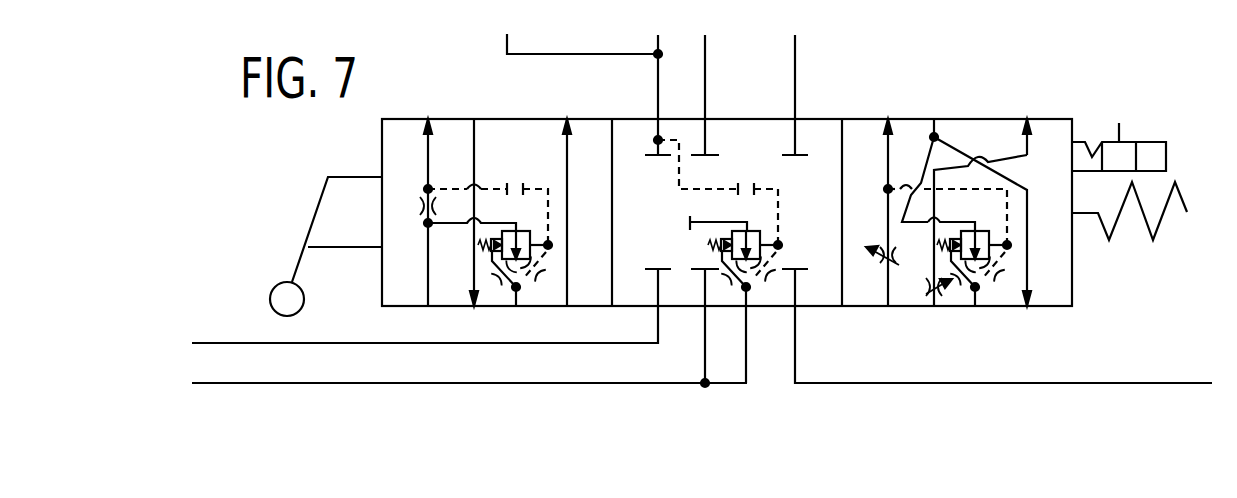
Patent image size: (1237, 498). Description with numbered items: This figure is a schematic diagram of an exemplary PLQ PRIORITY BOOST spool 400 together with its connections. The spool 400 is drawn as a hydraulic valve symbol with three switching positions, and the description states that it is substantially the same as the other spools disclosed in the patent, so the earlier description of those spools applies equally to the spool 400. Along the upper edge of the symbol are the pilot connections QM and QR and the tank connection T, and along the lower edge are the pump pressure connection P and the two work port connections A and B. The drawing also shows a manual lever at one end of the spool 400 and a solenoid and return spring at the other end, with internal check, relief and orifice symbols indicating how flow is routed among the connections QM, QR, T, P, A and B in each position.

The spool 400 is at (956, 89).
The meter-in pilot pressure port QM is at (597, 94).
The return pilot pressure port QR is at (712, 95).
The tank port T is at (792, 95).
The pump pressure port P is at (431, 306).
The work port A is at (469, 328).
The work port B is at (994, 326).